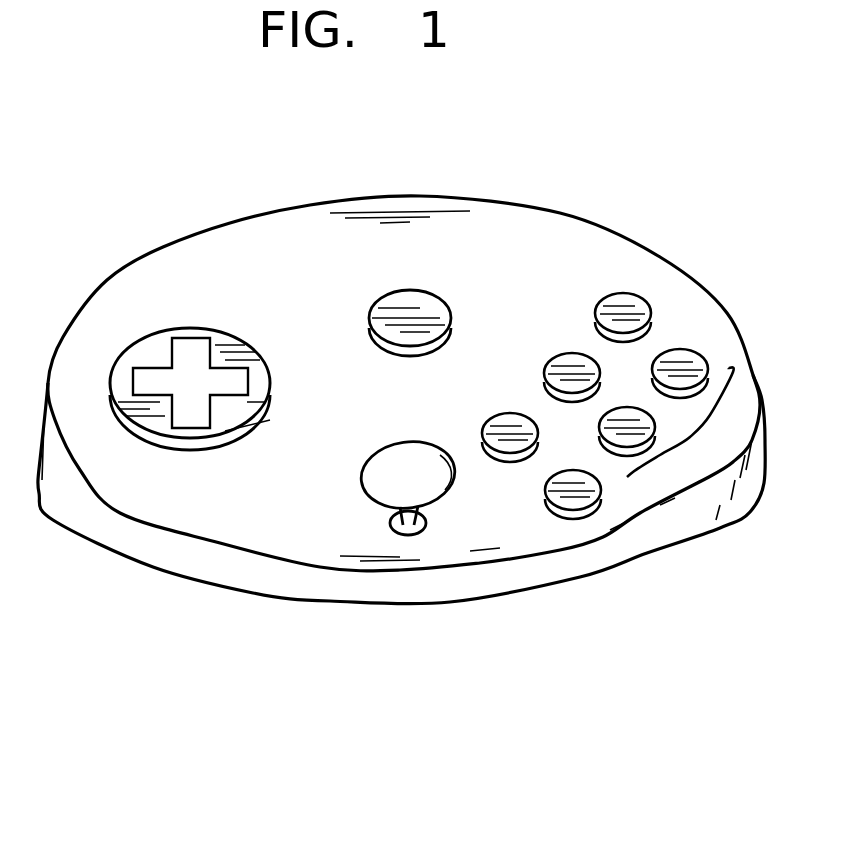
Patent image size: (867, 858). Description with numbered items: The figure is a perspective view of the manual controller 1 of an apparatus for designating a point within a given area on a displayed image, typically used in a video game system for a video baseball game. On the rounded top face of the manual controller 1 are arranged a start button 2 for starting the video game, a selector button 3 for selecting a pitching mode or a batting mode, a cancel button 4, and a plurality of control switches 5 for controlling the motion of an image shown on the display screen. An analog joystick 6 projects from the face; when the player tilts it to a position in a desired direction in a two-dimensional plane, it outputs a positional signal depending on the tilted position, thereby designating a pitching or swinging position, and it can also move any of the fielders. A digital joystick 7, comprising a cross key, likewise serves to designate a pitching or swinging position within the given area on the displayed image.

The manual controller 1 is at (250, 596).
The start button 2 is at (405, 320).
The selector button 3 is at (587, 513).
The cancel button 4 is at (502, 440).
The control switches 5 is at (697, 445).
The analog joystick 6 is at (375, 487).
The digital joystick 7 is at (220, 330).